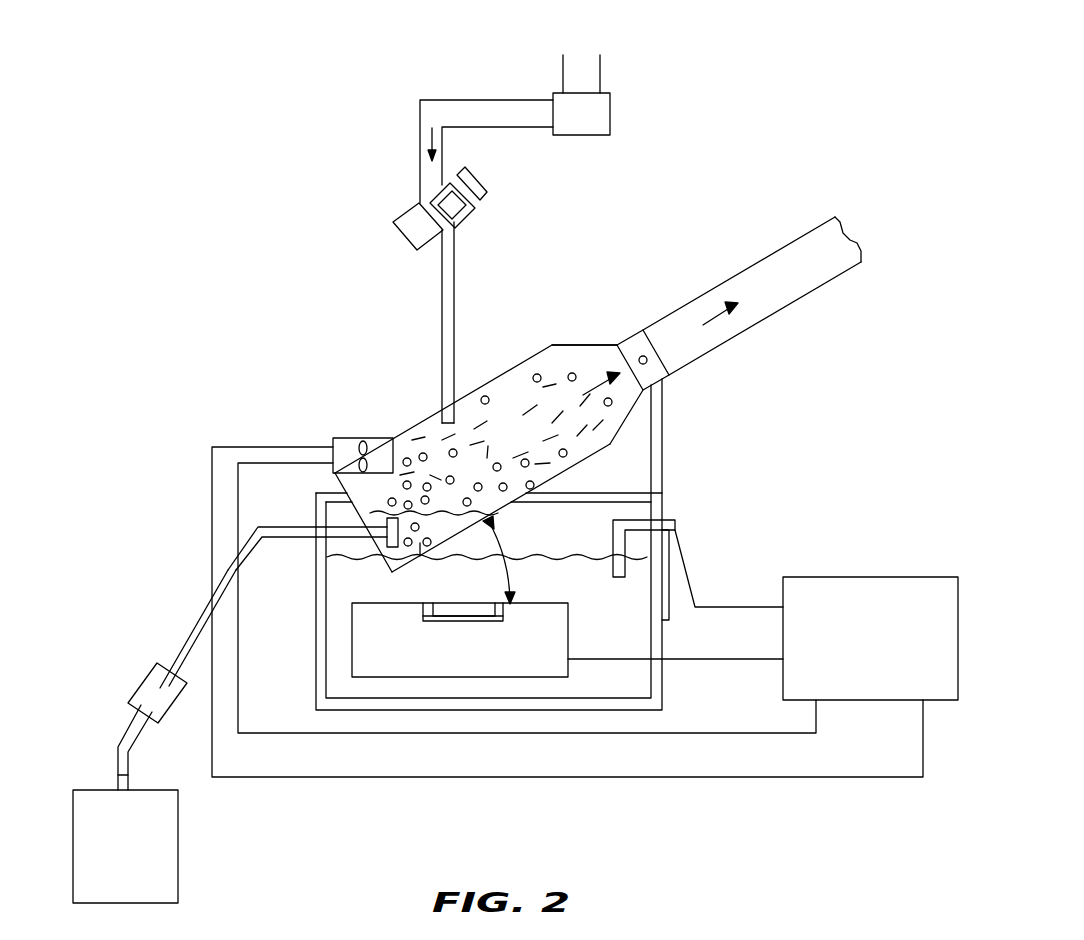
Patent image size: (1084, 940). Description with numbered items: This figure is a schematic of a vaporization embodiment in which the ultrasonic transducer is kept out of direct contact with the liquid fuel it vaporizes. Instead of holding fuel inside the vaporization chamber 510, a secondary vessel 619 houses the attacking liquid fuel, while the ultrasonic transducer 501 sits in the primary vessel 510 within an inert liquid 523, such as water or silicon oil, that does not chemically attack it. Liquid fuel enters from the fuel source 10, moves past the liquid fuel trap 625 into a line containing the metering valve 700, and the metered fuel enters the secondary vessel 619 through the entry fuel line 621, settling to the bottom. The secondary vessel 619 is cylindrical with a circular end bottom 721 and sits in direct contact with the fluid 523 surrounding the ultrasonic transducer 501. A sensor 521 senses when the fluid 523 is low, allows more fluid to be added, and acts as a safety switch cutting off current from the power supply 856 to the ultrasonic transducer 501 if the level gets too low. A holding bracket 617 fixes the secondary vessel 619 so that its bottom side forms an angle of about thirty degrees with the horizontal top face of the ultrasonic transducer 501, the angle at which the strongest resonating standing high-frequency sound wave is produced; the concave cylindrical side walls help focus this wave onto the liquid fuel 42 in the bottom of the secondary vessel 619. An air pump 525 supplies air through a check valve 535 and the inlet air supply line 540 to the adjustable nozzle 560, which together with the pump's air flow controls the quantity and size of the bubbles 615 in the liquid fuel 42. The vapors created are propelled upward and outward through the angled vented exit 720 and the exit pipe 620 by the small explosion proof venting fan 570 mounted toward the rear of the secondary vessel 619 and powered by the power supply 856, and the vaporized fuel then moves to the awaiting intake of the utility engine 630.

The fuel source 10 is at (596, 41).
The liquid fuel trap 625 is at (612, 116).
The metering valve 700 is at (483, 183).
The entry fuel line 621 is at (441, 337).
The secondary vessel 619 is at (496, 376).
The angled vented exit 720 is at (582, 345).
The bubbles 615 is at (420, 558).
The holding bracket 617 is at (662, 418).
The exit pipe 620 is at (738, 270).
The utility engine 630 is at (853, 238).
The explosion proof venting fan 570 is at (352, 437).
The adjustable nozzle 560 is at (380, 532).
The circular end bottom 721 is at (440, 552).
The inert liquid 523 is at (603, 600).
The liquid fuel 42 is at (432, 550).
The ultrasonic transducer 501 is at (548, 655).
The vaporization chamber 510 is at (377, 712).
The sensor 521 is at (673, 518).
The power supply 856 is at (883, 577).
The inlet air supply line 540 is at (195, 623).
The check valve 535 is at (140, 682).
The air pump 525 is at (178, 853).